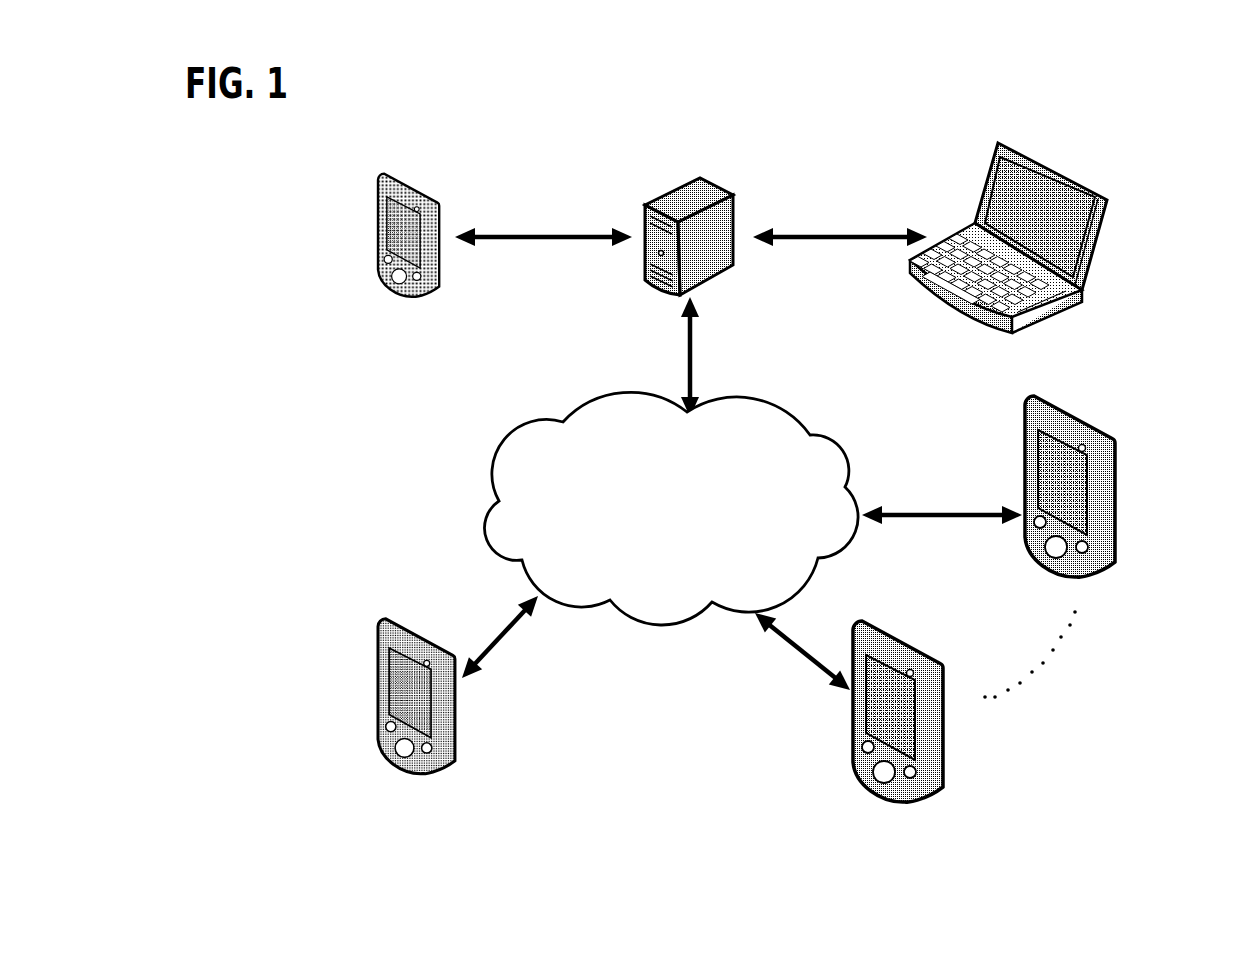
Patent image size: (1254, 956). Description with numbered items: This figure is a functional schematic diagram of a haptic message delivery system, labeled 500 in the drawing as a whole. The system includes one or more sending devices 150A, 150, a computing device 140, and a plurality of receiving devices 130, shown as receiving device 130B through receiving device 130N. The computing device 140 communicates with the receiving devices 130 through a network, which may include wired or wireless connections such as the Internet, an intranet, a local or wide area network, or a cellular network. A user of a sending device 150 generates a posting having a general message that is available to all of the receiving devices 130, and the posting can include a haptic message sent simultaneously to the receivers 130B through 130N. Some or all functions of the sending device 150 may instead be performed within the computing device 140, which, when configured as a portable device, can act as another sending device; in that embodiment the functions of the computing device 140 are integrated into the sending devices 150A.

The system 500 is at (1137, 136).
The sending device 150A is at (418, 185).
The computing device 140 is at (698, 180).
The sending device 150 is at (1095, 247).
The receiving device 130N is at (1115, 528).
The receiving device 130B is at (943, 740).
The receiving devices 130 is at (457, 740).